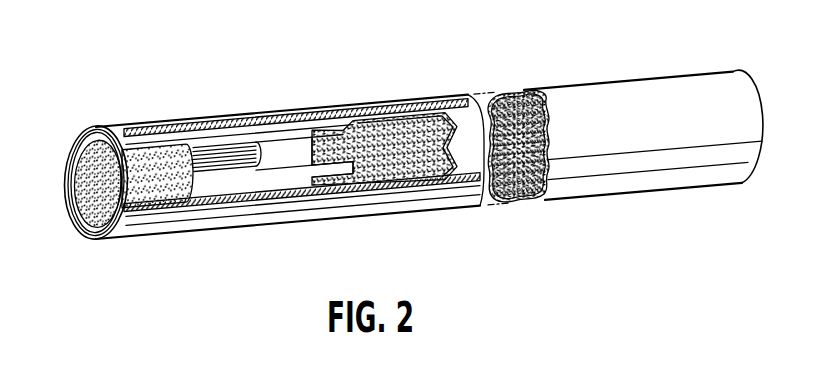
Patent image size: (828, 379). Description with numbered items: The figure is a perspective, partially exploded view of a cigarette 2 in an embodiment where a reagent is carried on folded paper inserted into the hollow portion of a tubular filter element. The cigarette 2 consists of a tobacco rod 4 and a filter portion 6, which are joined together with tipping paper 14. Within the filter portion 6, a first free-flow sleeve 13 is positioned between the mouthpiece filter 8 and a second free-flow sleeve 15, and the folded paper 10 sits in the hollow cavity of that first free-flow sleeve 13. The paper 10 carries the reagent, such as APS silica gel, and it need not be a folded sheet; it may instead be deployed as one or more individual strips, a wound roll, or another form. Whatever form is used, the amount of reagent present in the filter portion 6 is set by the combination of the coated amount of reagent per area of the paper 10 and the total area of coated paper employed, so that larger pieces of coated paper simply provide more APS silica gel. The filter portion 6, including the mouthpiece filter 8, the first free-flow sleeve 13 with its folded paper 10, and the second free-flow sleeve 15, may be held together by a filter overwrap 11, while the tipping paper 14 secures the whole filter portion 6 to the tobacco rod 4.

The cigarette 2 is at (246, 72).
The tobacco rod 4 is at (610, 99).
The filter portion 6 is at (185, 110).
The mouthpiece filter 8 is at (74, 142).
The folded paper 10 is at (207, 168).
The filter overwrap 11 is at (84, 233).
The first free-flow sleeve 13 is at (242, 183).
The tipping paper 14 is at (290, 119).
The second free-flow sleeve 15 is at (327, 177).